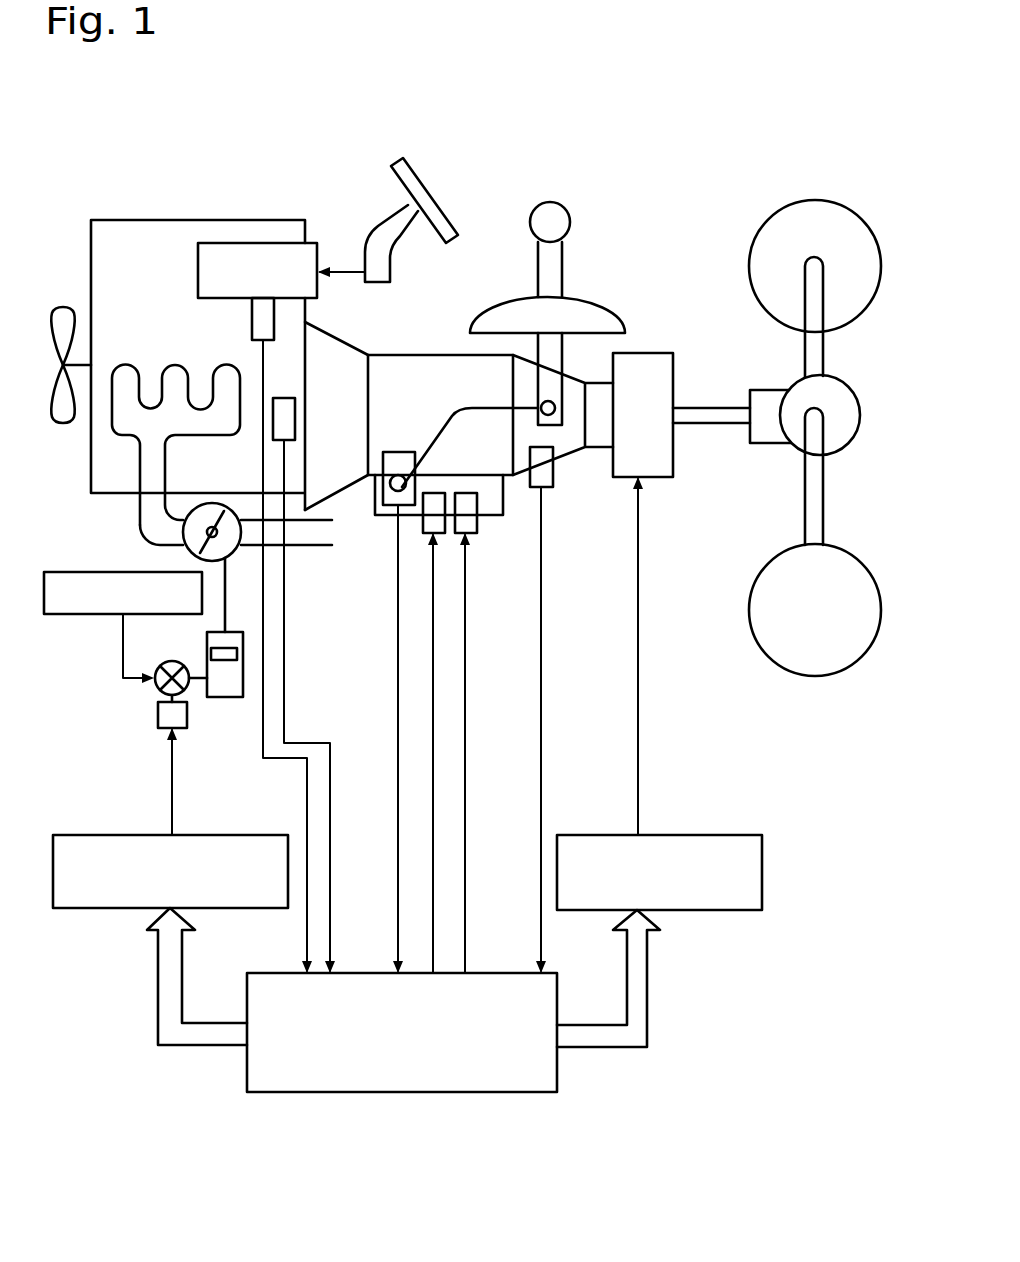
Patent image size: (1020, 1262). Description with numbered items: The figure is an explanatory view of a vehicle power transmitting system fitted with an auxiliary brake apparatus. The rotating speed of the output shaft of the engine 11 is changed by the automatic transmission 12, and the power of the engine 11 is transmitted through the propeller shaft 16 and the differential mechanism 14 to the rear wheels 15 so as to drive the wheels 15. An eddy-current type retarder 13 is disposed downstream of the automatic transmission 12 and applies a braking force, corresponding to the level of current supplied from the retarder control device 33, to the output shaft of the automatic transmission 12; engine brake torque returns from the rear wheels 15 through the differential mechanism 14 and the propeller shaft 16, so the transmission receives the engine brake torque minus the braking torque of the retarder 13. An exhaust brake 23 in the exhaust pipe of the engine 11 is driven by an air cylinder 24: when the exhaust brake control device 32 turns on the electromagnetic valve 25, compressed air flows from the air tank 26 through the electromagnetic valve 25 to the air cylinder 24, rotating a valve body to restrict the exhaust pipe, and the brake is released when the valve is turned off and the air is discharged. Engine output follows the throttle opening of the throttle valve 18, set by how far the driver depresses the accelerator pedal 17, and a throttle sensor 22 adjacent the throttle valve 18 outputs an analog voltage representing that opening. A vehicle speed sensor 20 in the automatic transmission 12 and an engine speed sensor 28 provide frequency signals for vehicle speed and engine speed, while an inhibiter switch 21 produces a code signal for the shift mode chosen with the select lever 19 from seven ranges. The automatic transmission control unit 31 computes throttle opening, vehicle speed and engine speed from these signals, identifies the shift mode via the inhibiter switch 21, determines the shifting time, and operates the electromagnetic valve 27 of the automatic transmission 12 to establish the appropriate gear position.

The engine 11 is at (249, 220).
The automatic transmission 12 is at (433, 355).
The eddy-current type retarder 13 is at (660, 478).
The differential mechanism 14 is at (795, 384).
The rear wheels 15 is at (815, 200).
The propeller shaft 16 is at (717, 424).
The accelerator pedal 17 is at (423, 184).
The throttle valve 18 is at (198, 272).
The select lever 19 is at (562, 262).
The vehicle speed sensor 20 is at (553, 477).
The inhibiter switch 21 is at (398, 452).
The throttle sensor 22 is at (252, 320).
The exhaust brake 23 is at (205, 504).
The air cylinder 24 is at (207, 642).
The electromagnetic valve 25 is at (158, 715).
The air tank 26 is at (90, 614).
The electromagnetic valve 27 is at (477, 533).
The engine speed sensor 28 is at (296, 418).
The automatic transmission control unit 31 is at (352, 973).
The exhaust brake control device 32 is at (96, 835).
The retarder control device 33 is at (694, 835).